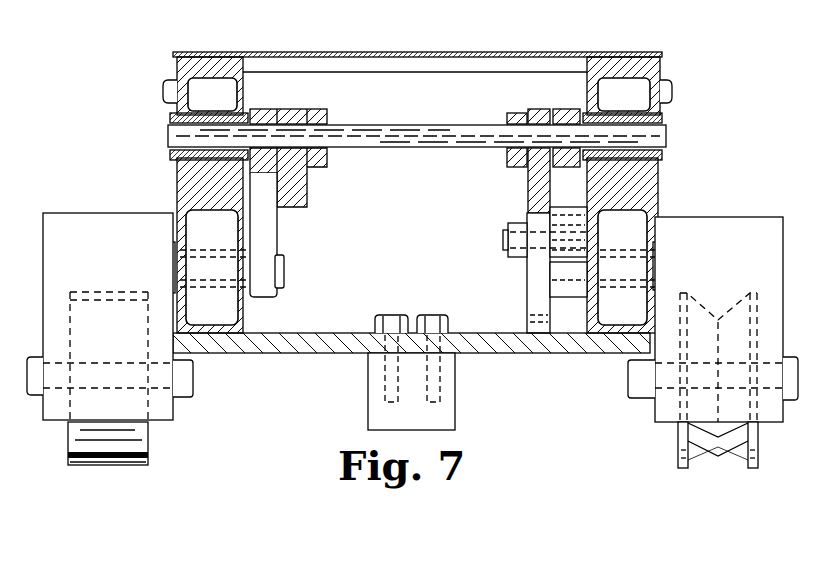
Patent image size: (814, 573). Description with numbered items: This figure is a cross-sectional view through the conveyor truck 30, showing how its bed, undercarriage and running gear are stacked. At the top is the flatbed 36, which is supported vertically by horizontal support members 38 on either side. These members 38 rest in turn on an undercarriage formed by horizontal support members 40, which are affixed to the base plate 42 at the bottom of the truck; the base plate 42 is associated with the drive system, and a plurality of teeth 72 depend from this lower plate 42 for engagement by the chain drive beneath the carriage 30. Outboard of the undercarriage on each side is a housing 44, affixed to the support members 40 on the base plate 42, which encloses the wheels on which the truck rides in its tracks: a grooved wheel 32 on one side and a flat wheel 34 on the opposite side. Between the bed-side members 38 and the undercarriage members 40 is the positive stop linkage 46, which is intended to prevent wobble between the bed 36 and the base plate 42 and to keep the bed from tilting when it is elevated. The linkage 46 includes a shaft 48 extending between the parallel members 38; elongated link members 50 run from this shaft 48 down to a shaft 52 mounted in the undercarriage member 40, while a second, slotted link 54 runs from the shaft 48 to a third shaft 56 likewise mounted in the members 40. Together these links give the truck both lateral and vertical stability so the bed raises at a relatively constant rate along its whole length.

The conveyor truck 30 is at (6, 258).
The grooved wheel 32 is at (760, 440).
The flat wheel 34 is at (68, 438).
The flatbed 36 is at (390, 52).
The horizontal support member 38 is at (175, 192).
The horizontal support member 40 is at (176, 210).
The base plate 42 is at (493, 333).
The housing 44 is at (78, 212).
The positive stop linkage 46 is at (510, 176).
The shaft 48 is at (447, 124).
The elongated link member 50 is at (307, 177).
The shaft 52 is at (510, 242).
The slotted link 54 is at (277, 225).
The third shaft 56 is at (284, 268).
The teeth 72 is at (452, 388).